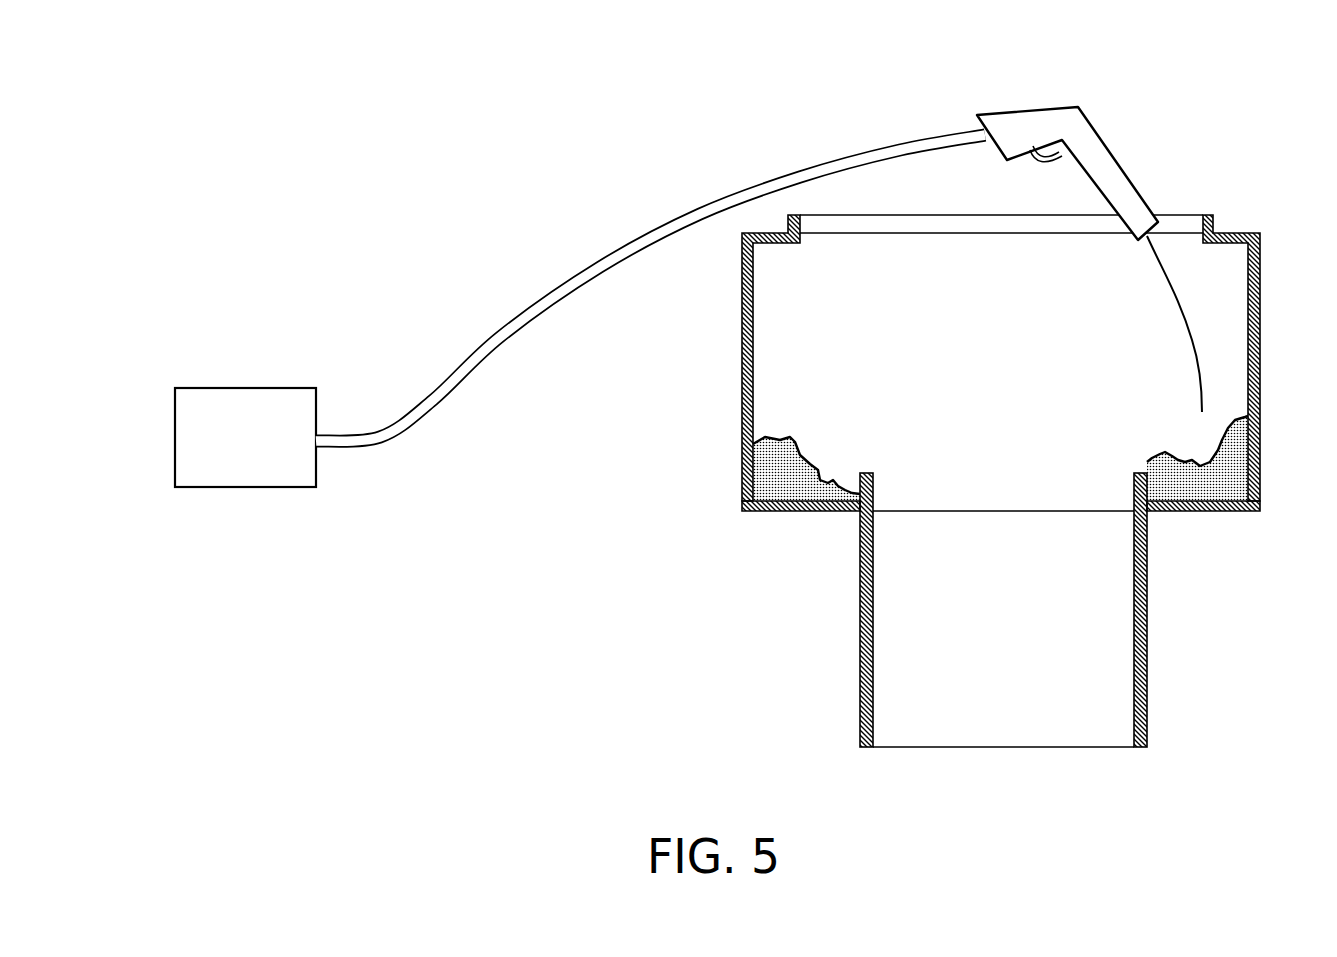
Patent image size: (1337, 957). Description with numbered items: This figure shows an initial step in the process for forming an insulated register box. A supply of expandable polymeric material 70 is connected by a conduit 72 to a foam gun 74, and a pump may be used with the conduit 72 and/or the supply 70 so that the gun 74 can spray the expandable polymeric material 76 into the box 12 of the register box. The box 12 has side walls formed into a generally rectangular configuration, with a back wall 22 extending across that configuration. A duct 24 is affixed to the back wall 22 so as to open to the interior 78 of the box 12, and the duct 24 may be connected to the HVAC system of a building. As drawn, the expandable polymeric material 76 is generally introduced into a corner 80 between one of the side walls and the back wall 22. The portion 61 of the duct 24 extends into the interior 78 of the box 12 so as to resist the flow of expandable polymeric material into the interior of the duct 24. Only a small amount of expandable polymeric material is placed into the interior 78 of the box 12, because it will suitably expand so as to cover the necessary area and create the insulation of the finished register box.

The box 12 is at (1037, 403).
The back wall 22 is at (1180, 512).
The duct 24 is at (1040, 610).
The portion of the duct 61 is at (1134, 478).
The supply of expandable polymeric material 70 is at (254, 388).
The conduit 72 is at (431, 393).
The foam gun 74 is at (1038, 108).
The expandable polymeric material 76 is at (1176, 316).
The interior 78 is at (966, 364).
The corner 80 is at (1234, 487).